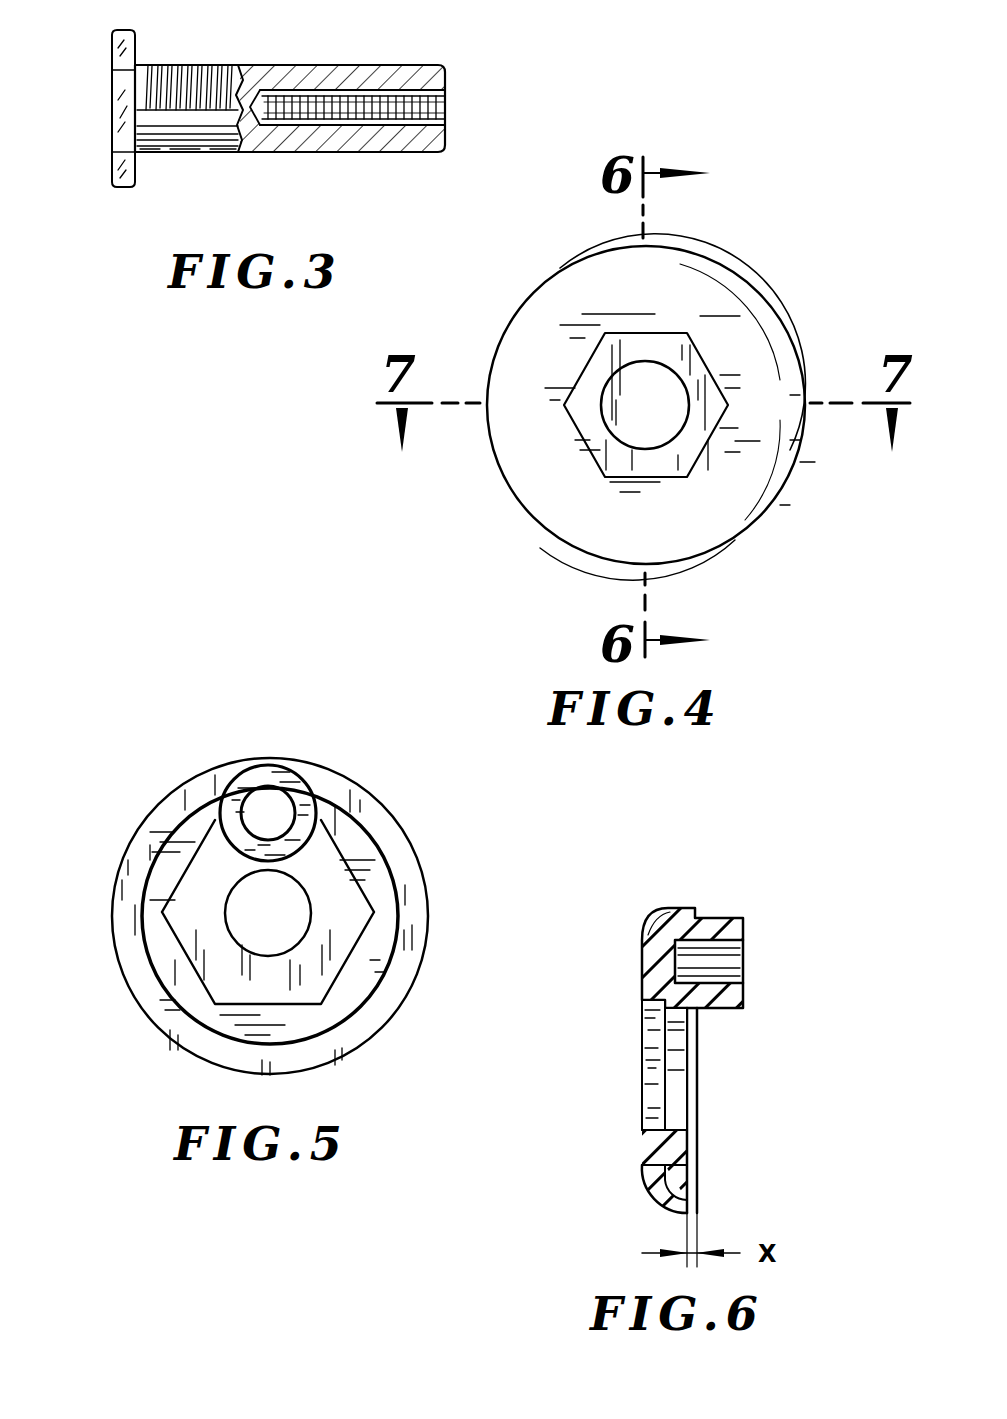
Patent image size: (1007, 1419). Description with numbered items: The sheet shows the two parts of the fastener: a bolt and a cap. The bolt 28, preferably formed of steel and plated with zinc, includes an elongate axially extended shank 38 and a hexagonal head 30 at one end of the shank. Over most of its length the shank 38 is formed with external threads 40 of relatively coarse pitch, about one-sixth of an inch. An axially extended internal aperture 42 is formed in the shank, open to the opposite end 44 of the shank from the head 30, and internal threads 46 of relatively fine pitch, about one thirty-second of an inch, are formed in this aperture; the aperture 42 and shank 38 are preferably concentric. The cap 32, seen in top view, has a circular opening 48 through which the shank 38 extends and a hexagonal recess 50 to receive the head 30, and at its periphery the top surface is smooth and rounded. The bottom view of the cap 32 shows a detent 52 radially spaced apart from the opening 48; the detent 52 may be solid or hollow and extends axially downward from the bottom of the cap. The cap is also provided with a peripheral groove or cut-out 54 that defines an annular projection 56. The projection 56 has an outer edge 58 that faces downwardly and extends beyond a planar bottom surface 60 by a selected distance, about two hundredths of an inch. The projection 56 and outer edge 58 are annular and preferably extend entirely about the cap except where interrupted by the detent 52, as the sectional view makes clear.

In FIG. 3, the bolt 28 is at (197, 62).
In FIG. 3, the hexagonal head 30 is at (118, 102).
In FIG. 4, the cap 32 is at (570, 505).
In FIG. 5, the cap 32 is at (377, 798).
In FIG. 3, the shank 38 is at (167, 152).
In FIG. 3, the external threads 40 is at (227, 152).
In FIG. 3, the internal aperture 42 is at (385, 118).
In FIG. 3, the opposite end 44 is at (445, 132).
In FIG. 3, the internal threads 46 is at (443, 98).
In FIG. 4, the circular opening 48 is at (648, 364).
In FIG. 5, the circular opening 48 is at (293, 877).
In FIG. 6, the circular opening 48 is at (675, 1058).
In FIG. 4, the hexagonal recess 50 is at (690, 440).
In FIG. 6, the hexagonal recess 50 is at (647, 1037).
In FIG. 5, the detent 52 is at (258, 777).
In FIG. 6, the detent 52 is at (722, 916).
In FIG. 5, the peripheral groove or cut-out 54 is at (377, 875).
In FIG. 6, the peripheral groove or cut-out 54 is at (677, 1177).
In FIG. 5, the annular projection 56 is at (185, 800).
In FIG. 6, the annular projection 56 is at (650, 1195).
In FIG. 5, the outer edge 58 is at (362, 1023).
In FIG. 6, the outer edge 58 is at (697, 1110).
In FIG. 5, the planar bottom surface 60 is at (210, 952).
In FIG. 6, the planar bottom surface 60 is at (688, 1143).